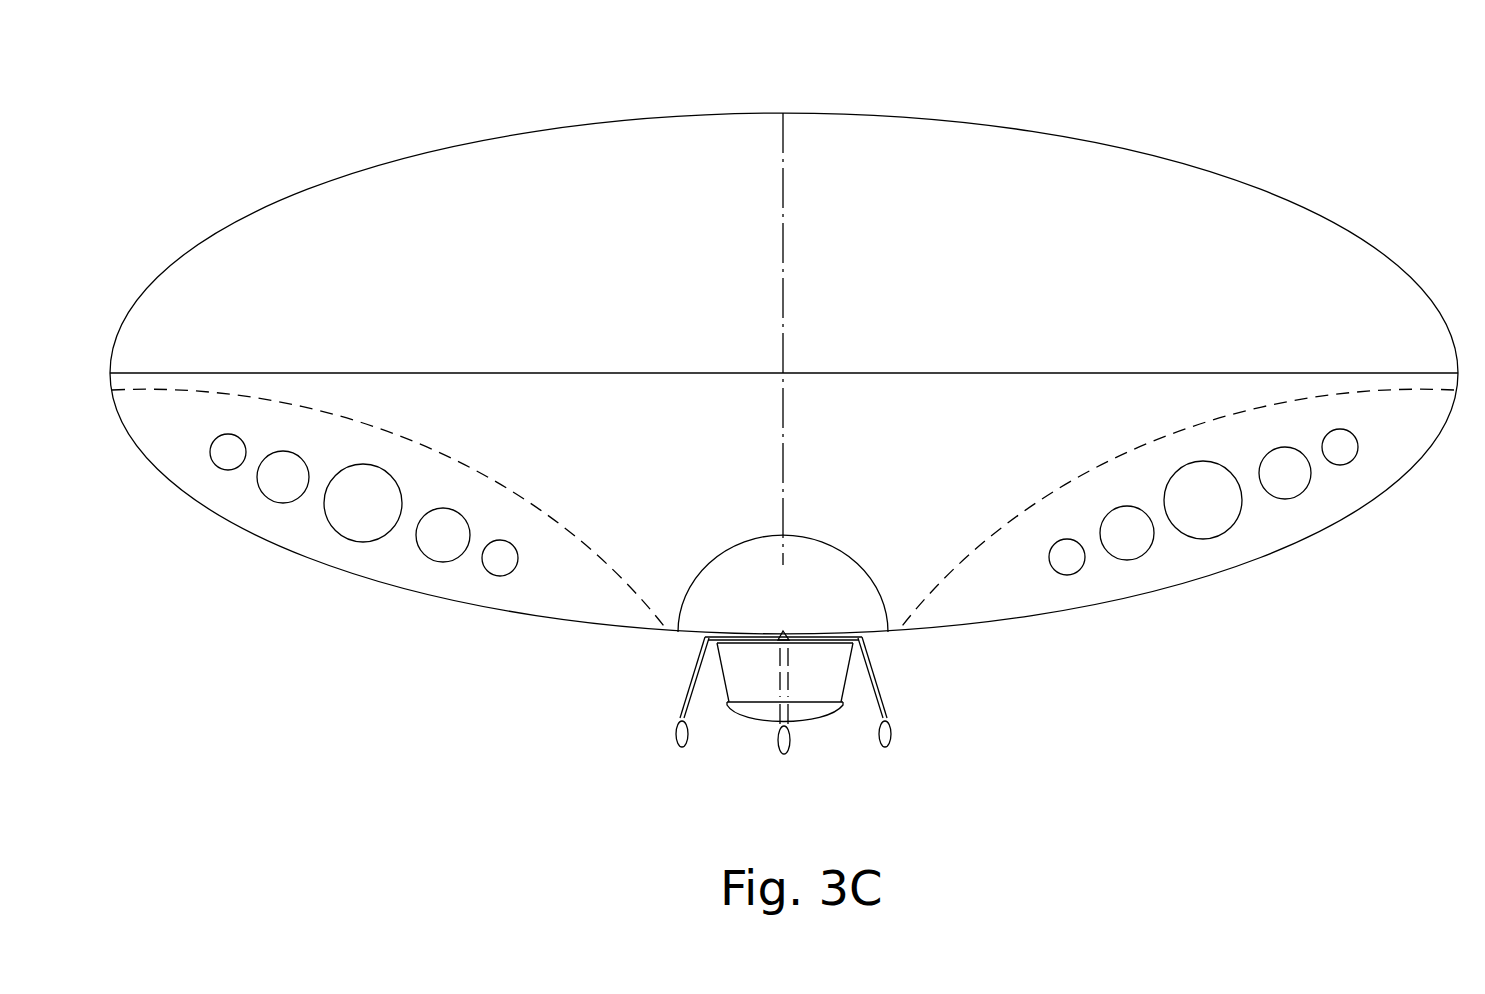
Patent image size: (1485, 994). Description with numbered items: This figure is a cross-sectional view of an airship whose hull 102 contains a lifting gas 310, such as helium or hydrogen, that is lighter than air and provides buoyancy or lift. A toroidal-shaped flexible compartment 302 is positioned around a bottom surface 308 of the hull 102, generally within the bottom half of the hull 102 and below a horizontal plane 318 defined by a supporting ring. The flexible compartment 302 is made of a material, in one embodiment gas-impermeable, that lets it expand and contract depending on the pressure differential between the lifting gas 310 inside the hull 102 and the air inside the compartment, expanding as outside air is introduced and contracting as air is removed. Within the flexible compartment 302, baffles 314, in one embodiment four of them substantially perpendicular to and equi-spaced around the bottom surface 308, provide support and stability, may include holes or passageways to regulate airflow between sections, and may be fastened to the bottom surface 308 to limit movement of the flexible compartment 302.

The hull 102 is at (1067, 133).
The flexible compartment 302 is at (1263, 403).
The bottom surface 308 is at (748, 538).
The lifting gas 310 is at (1000, 281).
The baffles 314 is at (385, 455).
The horizontal plane 318 is at (872, 372).